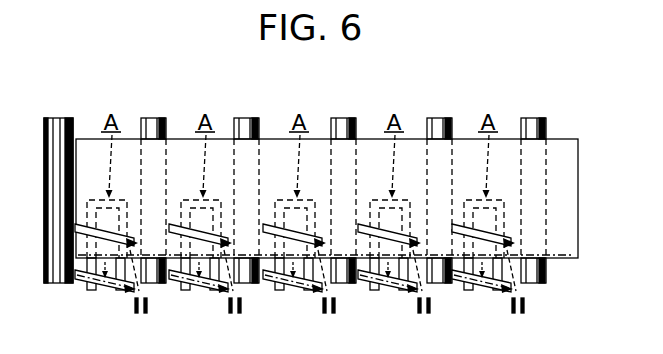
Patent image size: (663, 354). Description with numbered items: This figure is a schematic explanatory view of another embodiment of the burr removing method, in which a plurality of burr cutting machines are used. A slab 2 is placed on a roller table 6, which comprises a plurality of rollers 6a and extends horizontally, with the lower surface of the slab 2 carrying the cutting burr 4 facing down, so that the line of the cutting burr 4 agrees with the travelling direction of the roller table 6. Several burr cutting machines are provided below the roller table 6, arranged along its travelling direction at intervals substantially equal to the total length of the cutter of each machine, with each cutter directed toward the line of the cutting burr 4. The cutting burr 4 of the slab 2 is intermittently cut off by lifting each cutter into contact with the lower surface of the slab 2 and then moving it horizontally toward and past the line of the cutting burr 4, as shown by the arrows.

The slab 2 is at (580, 170).
The cutting burr 4 is at (578, 259).
The roller table 6 is at (333, 171).
The rollers 6a is at (60, 118).